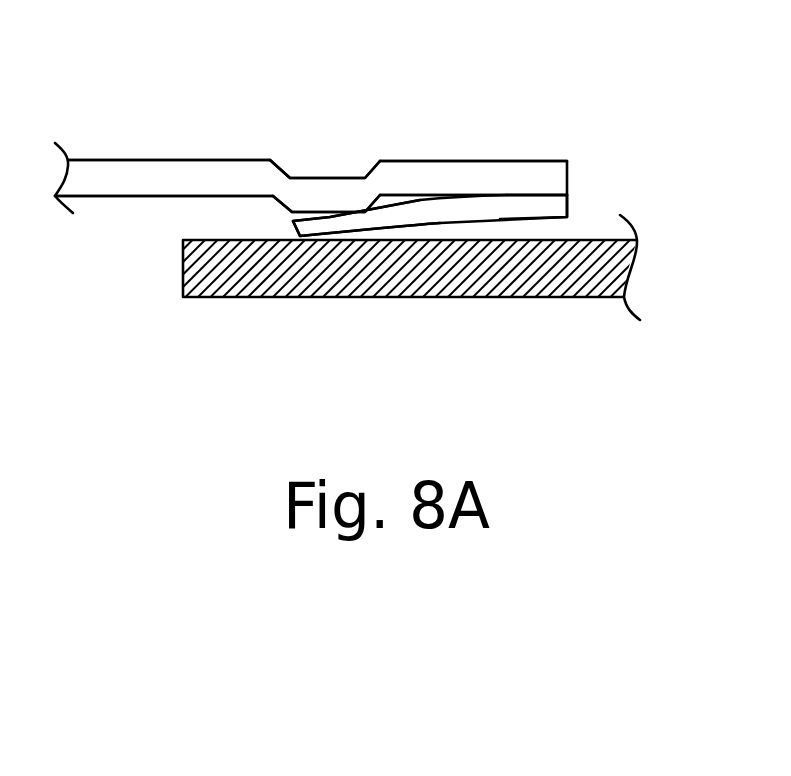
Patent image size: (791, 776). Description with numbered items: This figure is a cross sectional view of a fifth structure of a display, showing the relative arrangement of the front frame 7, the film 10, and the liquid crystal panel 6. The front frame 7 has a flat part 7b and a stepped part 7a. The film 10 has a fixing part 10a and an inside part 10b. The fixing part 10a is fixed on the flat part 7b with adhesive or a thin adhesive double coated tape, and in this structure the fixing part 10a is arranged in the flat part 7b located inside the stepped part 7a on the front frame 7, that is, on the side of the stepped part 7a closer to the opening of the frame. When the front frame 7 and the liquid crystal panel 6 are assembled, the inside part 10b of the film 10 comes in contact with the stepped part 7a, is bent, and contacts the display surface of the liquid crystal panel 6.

The liquid crystal panel 6 is at (257, 297).
The front frame 7 is at (222, 160).
The stepped part 7a is at (308, 178).
The flat part 7b is at (105, 160).
The film 10 is at (508, 202).
The fixing part 10a is at (547, 193).
The inside part 10b is at (330, 217).